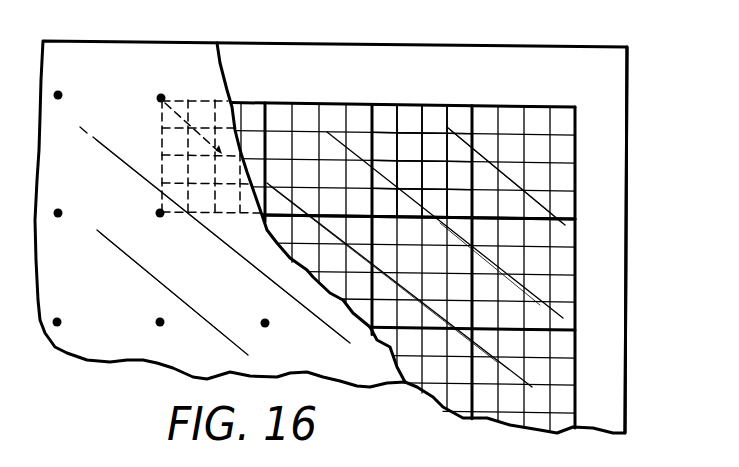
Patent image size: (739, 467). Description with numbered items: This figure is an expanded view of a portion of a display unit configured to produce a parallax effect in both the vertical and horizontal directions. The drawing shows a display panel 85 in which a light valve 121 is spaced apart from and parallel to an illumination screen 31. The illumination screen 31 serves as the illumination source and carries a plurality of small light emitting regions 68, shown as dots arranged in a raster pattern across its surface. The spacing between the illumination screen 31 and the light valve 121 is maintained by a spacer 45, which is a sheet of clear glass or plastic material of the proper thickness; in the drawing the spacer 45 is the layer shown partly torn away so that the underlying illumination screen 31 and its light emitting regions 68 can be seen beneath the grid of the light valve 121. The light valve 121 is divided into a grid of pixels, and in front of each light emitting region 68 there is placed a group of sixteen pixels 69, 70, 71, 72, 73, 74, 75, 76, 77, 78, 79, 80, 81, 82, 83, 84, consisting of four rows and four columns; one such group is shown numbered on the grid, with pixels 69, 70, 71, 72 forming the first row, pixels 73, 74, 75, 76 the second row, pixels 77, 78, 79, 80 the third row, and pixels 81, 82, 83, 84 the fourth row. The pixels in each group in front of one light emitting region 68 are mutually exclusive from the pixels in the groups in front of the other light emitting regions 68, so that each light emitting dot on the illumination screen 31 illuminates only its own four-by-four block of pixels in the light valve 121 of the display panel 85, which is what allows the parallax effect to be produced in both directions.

The illumination screen 31 is at (138, 41).
The spacer 45 is at (396, 223).
The display panel 85 is at (632, 84).
The light emitting regions 68 is at (161, 98).
The light valve 121 is at (477, 215).
The pixel 69 is at (384, 118).
The pixel 70 is at (409, 119).
The pixel 71 is at (434, 119).
The pixel 72 is at (459, 119).
The pixel 73 is at (384, 146).
The pixel 74 is at (409, 147).
The pixel 75 is at (434, 147).
The pixel 76 is at (459, 147).
The pixel 77 is at (384, 174).
The pixel 78 is at (409, 175).
The pixel 79 is at (434, 175).
The pixel 80 is at (459, 175).
The pixel 81 is at (384, 202).
The pixel 82 is at (409, 203).
The pixel 83 is at (434, 203).
The pixel 84 is at (459, 203).